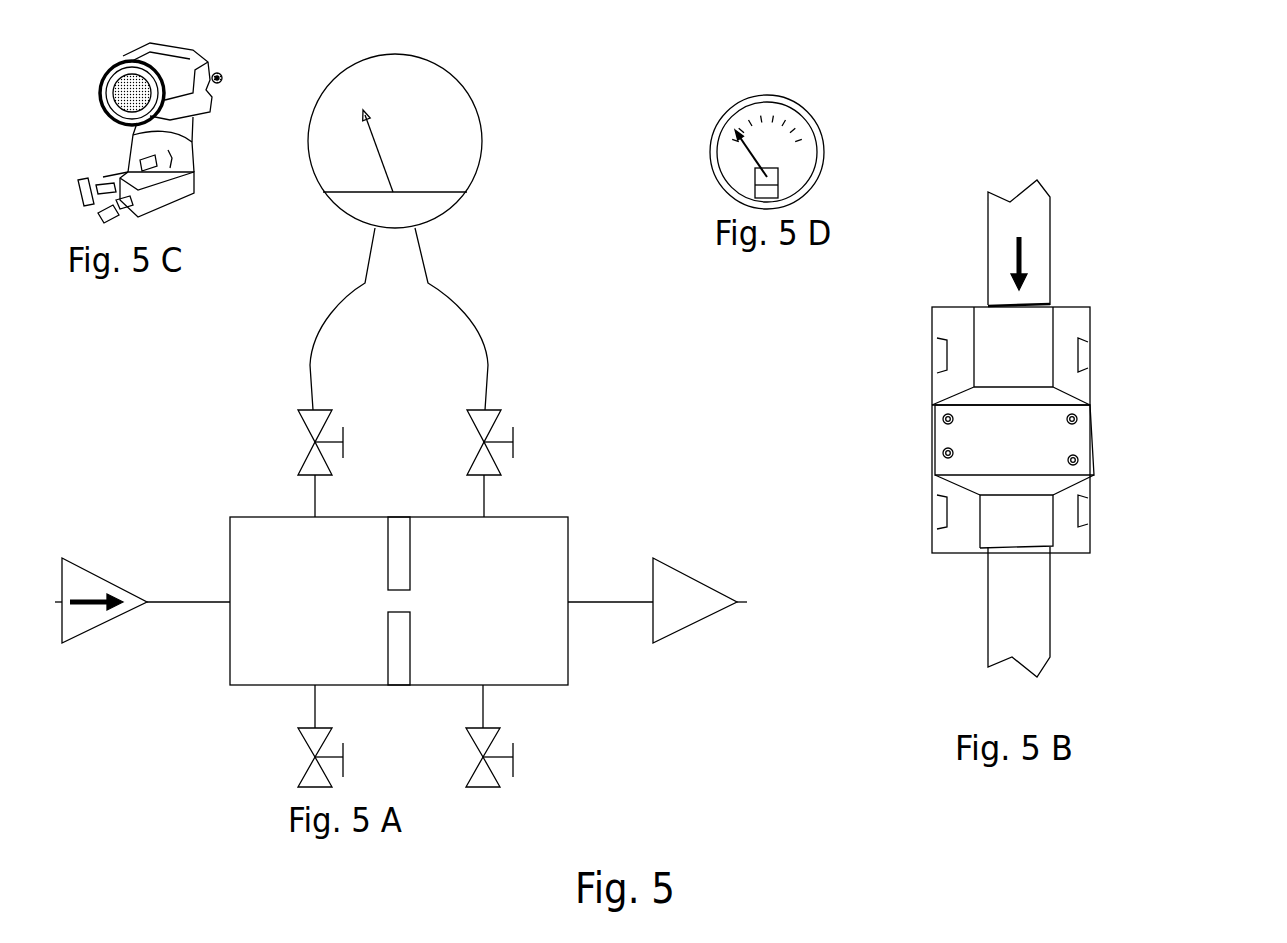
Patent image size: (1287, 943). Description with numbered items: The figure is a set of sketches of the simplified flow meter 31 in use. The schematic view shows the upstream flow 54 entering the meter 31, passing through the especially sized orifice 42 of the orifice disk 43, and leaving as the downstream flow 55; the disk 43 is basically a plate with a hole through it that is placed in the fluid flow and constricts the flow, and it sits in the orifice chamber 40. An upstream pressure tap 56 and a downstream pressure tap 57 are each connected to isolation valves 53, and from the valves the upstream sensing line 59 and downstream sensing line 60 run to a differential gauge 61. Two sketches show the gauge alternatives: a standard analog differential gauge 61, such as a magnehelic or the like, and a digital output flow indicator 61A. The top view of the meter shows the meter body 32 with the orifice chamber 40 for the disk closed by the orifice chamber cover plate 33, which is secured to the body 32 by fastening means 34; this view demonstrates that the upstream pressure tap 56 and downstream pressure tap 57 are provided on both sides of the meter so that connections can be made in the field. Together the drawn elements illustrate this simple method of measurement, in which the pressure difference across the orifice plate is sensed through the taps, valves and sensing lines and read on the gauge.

In FIG. 5A, the simplified flow meter 31 is at (265, 748).
In FIG. 5B, the simplified flow meter 31 is at (907, 585).
In FIG. 5B, the meter body 32 is at (1030, 338).
In FIG. 5B, the orifice chamber cover plate 33 is at (988, 448).
In FIG. 5B, the fastening means 34 is at (940, 417).
In FIG. 5A, the orifice chamber 40 is at (445, 653).
In FIG. 5B, the orifice chamber 40 is at (1063, 439).
In FIG. 5A, the orifice 42 is at (413, 602).
In FIG. 5A, the orifice disk 43 is at (403, 548).
In FIG. 5A, the isolation valves 53 is at (313, 445).
In FIG. 5A, the upstream flow 54 is at (82, 582).
In FIG. 5B, the upstream flow 54 is at (1037, 210).
In FIG. 5A, the downstream flow 55 is at (676, 600).
In FIG. 5B, the downstream flow 55 is at (1033, 587).
In FIG. 5A, the upstream pressure tap 56 is at (313, 489).
In FIG. 5B, the upstream pressure tap 56 is at (937, 352).
In FIG. 5A, the downstream pressure tap 57 is at (490, 507).
In FIG. 5B, the downstream pressure tap 57 is at (937, 507).
In FIG. 5A, the upstream sensing line 59 is at (313, 348).
In FIG. 5A, the downstream sensing line 60 is at (490, 328).
In FIG. 5A, the differential gauge 61 is at (477, 107).
In FIG. 5D, the differential gauge 61 is at (803, 145).
In FIG. 5C, the digital differential gauge 61A is at (200, 120).